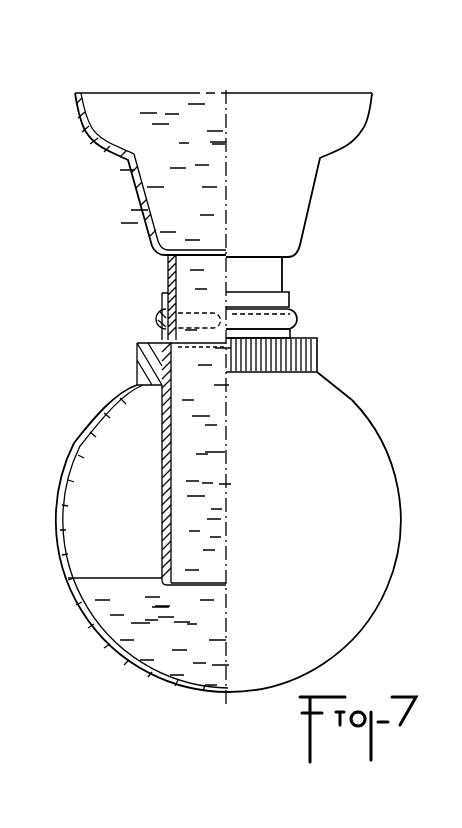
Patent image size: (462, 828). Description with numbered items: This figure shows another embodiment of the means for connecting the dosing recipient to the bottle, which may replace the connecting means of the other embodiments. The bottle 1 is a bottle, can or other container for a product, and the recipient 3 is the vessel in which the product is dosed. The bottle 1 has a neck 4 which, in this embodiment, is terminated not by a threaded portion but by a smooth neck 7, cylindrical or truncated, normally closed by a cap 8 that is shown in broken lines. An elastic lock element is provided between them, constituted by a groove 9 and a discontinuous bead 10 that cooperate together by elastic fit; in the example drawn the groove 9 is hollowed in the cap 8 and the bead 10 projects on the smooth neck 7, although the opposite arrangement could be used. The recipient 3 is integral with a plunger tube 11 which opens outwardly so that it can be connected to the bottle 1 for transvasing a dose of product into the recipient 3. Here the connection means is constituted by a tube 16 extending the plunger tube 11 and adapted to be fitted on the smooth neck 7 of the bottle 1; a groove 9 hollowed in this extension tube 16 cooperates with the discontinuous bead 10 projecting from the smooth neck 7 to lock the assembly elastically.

The bottle 1 is at (371, 130).
The recipient 3 is at (86, 437).
The neck 4 is at (298, 186).
The smooth neck 7 is at (167, 270).
The cap 8 is at (199, 351).
The groove 9 is at (160, 330).
The discontinuous bead 10 is at (158, 320).
The plunger tube 11 is at (162, 497).
The extension tube 16 is at (162, 298).